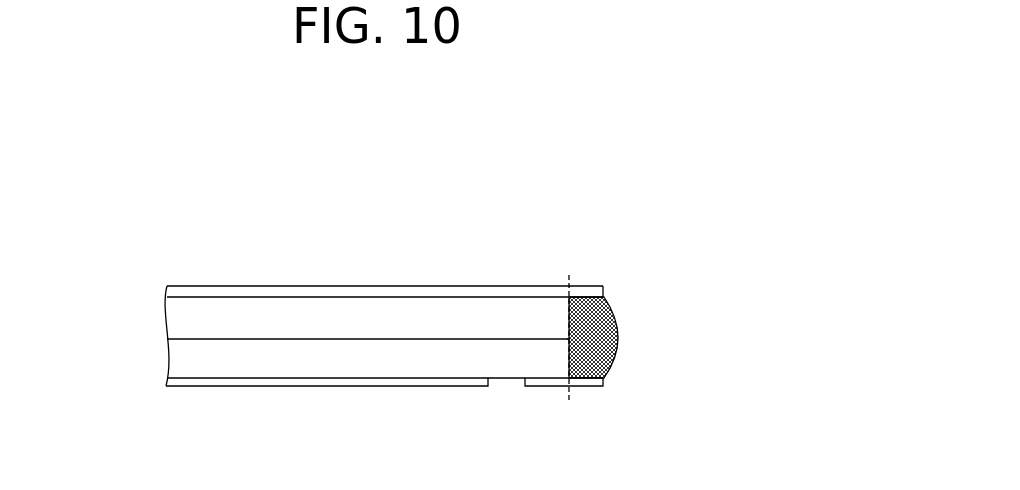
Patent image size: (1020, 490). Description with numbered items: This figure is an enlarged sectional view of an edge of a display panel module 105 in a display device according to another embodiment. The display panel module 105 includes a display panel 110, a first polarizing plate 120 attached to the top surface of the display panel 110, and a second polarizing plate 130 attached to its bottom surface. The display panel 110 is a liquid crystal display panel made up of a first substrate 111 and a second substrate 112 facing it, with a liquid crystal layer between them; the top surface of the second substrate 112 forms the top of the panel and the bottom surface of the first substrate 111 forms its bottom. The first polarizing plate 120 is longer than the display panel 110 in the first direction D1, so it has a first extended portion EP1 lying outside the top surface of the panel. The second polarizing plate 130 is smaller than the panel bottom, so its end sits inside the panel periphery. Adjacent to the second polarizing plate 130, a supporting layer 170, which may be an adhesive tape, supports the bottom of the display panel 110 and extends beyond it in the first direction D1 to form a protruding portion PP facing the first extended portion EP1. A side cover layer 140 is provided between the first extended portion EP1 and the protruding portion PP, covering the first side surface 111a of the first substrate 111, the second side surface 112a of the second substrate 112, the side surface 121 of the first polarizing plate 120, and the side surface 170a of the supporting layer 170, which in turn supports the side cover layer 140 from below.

The display panel module 105 is at (659, 213).
The display panel 110 is at (80, 302).
The first substrate 111 is at (178, 358).
The second substrate 112 is at (178, 313).
The first side surface 111a is at (567, 360).
The second side surface 112a is at (567, 322).
The first polarizing plate 120 is at (386, 292).
The side surface of the first polarizing plate 121 is at (605, 290).
The second polarizing plate 130 is at (386, 382).
The side cover layer 140 is at (615, 338).
The supporting layer 170 is at (533, 381).
The side surface of the supporting layer 170a is at (605, 386).
The first extended portion EP1 is at (603, 285).
The protruding portion PP is at (603, 390).
The first direction D1 is at (105, 478).